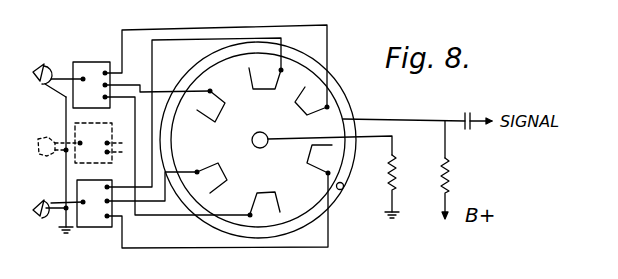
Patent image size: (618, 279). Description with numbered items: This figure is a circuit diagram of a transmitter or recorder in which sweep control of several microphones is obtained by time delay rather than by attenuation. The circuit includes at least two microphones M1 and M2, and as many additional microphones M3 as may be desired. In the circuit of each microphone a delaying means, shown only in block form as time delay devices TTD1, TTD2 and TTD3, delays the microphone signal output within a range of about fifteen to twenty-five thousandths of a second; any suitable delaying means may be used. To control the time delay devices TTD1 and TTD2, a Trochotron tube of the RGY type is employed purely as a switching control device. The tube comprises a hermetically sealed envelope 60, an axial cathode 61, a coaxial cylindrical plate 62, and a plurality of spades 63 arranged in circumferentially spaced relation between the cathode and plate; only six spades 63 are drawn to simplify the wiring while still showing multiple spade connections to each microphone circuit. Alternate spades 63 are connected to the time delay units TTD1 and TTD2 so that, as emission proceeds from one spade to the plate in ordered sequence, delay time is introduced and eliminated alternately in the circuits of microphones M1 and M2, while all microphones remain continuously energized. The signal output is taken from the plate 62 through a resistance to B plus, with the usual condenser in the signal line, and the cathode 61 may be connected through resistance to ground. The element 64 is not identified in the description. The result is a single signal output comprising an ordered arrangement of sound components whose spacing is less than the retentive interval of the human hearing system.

The hermetically sealed envelope 60 is at (337, 84).
The axial cathode 61 is at (256, 148).
The coaxial cylindrical plate 62 is at (347, 112).
The spades 63 is at (227, 98).
The pickup 64 is at (341, 190).
The microphone M1 is at (50, 60).
The microphone M2 is at (35, 200).
The additional microphone M3 is at (38, 142).
The time delay device TTD1 is at (93, 66).
The time delay device TTD2 is at (95, 216).
The time delay device TTD3 is at (75, 161).